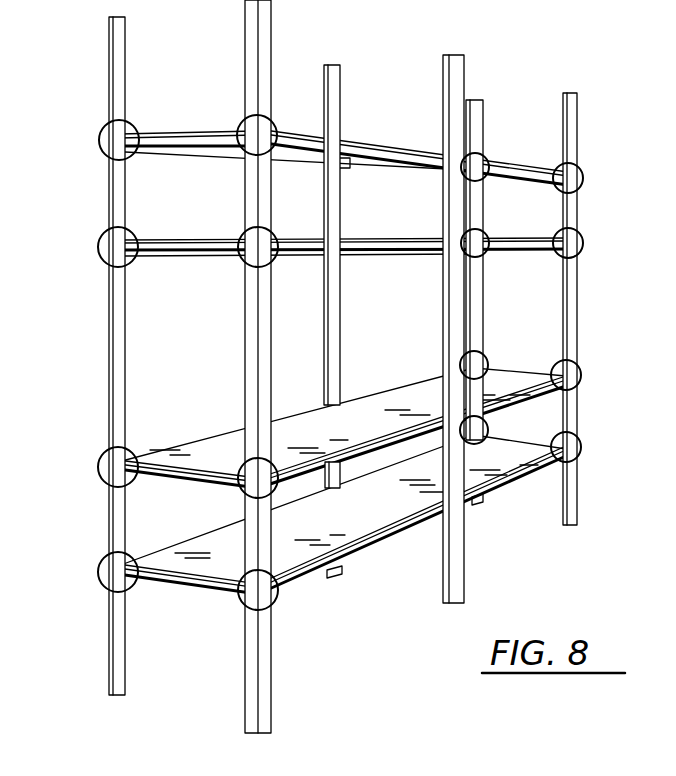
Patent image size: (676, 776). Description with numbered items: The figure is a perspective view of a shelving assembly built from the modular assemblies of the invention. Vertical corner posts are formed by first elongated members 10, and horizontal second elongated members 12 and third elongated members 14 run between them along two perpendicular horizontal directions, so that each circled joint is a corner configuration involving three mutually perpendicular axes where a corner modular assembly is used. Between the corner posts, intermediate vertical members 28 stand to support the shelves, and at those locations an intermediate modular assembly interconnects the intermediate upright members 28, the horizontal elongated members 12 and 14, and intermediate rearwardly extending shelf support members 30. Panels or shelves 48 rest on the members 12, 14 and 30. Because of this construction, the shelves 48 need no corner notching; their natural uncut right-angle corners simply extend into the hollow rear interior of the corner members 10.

The first elongated member 10 is at (264, 37).
The second elongated member 12 is at (200, 480).
The third elongated member 14 is at (390, 170).
The intermediate vertical member 28 is at (334, 73).
The intermediate rearwardly extending shelf support member 30 is at (350, 166).
The shelf 48 is at (307, 243).